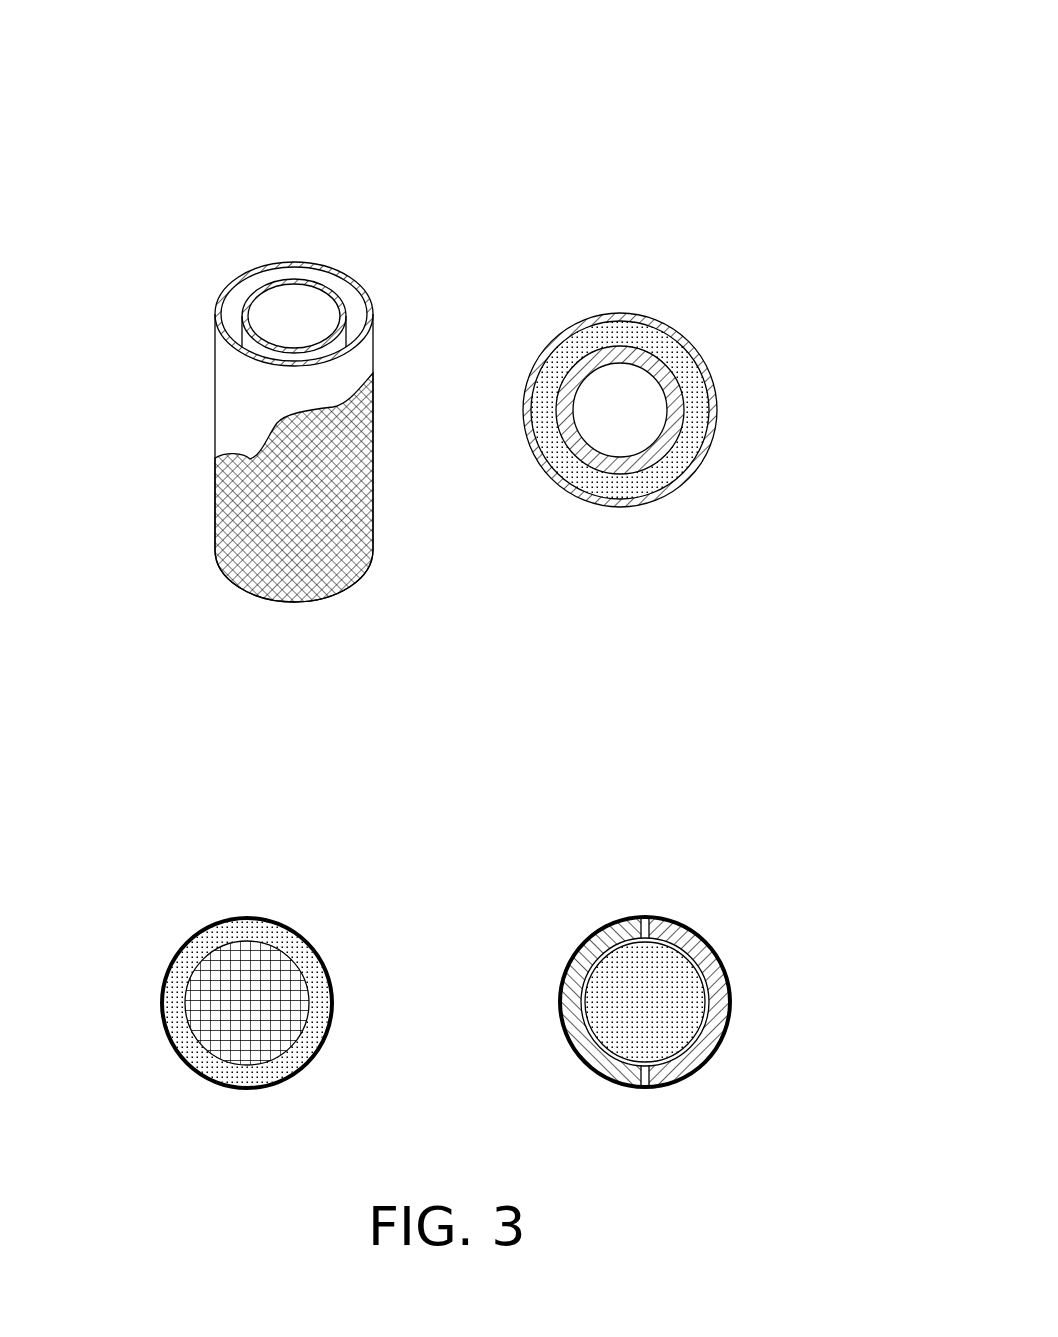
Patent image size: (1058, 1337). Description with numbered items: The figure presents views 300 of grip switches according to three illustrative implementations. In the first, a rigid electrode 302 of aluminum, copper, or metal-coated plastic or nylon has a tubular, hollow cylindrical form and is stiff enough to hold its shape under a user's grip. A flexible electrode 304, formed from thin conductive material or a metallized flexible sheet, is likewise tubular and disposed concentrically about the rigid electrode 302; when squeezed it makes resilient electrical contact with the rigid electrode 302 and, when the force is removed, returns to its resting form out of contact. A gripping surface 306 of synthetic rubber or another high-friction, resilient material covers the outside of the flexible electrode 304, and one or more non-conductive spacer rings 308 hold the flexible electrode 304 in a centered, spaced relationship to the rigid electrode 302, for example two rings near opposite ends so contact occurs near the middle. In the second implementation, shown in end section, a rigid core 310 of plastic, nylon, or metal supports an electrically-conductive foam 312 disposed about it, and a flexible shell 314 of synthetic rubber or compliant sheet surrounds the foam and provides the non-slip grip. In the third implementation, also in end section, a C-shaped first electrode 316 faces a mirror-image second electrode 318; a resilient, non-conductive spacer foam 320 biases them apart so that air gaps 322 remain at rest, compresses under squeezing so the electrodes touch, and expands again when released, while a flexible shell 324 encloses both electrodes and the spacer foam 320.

The views 300 is at (687, 60).
The rigid electrode 302 is at (587, 363).
The flexible electrode 304 is at (595, 502).
The gripping surface 306 is at (216, 523).
The spacer rings 308 is at (652, 340).
The rigid core 310 is at (190, 960).
The electrically-conductive foam 312 is at (235, 930).
The flexible shell 314 is at (180, 1060).
The first electrode 316 is at (603, 933).
The second electrode 318 is at (698, 928).
The spacer foam 320 is at (613, 1033).
The air gaps 322 is at (643, 920).
The flexible shell 324 is at (558, 988).